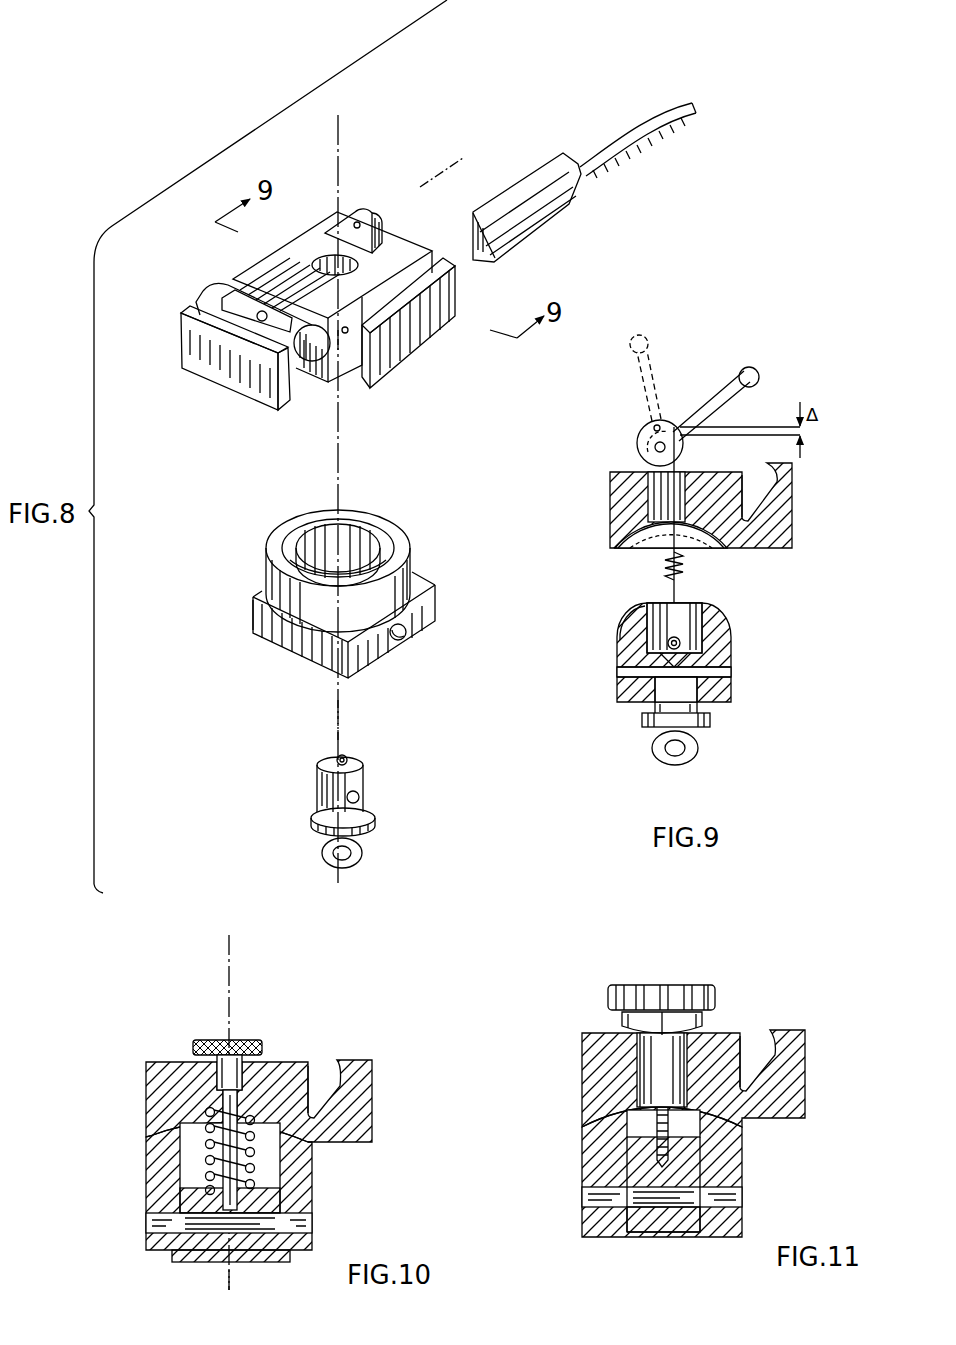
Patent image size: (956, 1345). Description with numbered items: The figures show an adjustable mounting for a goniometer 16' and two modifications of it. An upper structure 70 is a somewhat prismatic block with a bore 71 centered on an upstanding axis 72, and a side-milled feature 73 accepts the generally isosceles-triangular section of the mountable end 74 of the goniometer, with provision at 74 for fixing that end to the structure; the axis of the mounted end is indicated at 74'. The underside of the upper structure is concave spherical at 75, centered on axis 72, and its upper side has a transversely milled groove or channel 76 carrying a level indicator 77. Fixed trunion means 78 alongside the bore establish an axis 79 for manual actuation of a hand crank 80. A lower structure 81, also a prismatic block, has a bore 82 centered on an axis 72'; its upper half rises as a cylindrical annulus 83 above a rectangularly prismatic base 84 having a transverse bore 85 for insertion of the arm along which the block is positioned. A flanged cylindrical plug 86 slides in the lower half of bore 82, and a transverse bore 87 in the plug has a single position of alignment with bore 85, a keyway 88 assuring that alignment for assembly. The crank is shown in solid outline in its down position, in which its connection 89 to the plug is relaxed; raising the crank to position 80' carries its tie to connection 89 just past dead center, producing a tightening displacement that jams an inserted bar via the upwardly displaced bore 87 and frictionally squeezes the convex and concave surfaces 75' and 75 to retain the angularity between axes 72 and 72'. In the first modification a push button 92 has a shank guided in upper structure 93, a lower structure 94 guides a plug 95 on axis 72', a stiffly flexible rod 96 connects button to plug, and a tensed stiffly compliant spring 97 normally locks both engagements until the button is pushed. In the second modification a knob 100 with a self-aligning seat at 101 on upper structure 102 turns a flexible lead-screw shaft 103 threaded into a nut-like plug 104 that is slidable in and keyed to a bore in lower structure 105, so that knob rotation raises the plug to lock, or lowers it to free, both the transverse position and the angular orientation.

In FIG. 8, the goniometer 16' is at (632, 125).
In FIG. 9, the upper structure 70 is at (607, 493).
In FIG. 8, the bore 71 is at (385, 257).
In FIG. 9, the bore 71 is at (615, 527).
In FIG. 8, the upstanding axis 72 is at (376, 488).
In FIG. 10, the upstanding axis 72 is at (271, 1106).
In FIG. 8, the axis 72' is at (380, 719).
In FIG. 10, the axis 72' is at (278, 1286).
In FIG. 8, the side-milled feature 73 is at (383, 288).
In FIG. 9, the side-milled feature 73 is at (758, 470).
In FIG. 10, the side-milled feature 73 is at (322, 1066).
In FIG. 11, the side-milled feature 73 is at (759, 1036).
In FIG. 8, the mountable end 74 is at (527, 187).
In FIG. 8, the probe axis 74' is at (358, 399).
In FIG. 9, the concave spherical underside 75 is at (622, 559).
In FIG. 8, the convex spherical surface 75' is at (388, 546).
In FIG. 9, the convex spherical surface 75' is at (591, 614).
In FIG. 8, the transversely milled groove or channel 76 is at (342, 337).
In FIG. 8, the level indicator 77 is at (210, 300).
In FIG. 8, the fixed trunion means 78 is at (362, 212).
In FIG. 9, the fixed trunion means 78 is at (637, 467).
In FIG. 8, the axis 79 is at (447, 160).
In FIG. 9, the axis 79 is at (655, 443).
In FIG. 9, the hand crank 80 is at (717, 378).
In FIG. 9, the raised position of crank 80' is at (677, 378).
In FIG. 8, the lower structure 81 is at (290, 522).
In FIG. 9, the lower structure 81 is at (611, 655).
In FIG. 8, the bore 82 is at (367, 543).
In FIG. 9, the bore 82 is at (690, 603).
In FIG. 8, the cylindrical annulus 83 is at (318, 612).
In FIG. 8, the rectangularly prismatic base 84 is at (268, 616).
In FIG. 8, the transverse bore 85 is at (400, 633).
In FIG. 9, the transverse bore 85 is at (617, 672).
In FIG. 8, the flanged cylindrical plug 86 is at (378, 809).
In FIG. 9, the flanged cylindrical plug 86 is at (646, 731).
In FIG. 8, the transverse bore 87 is at (363, 775).
In FIG. 9, the transverse bore 87 is at (731, 667).
In FIG. 8, the keyway 88 is at (317, 813).
In FIG. 9, the connection 89 is at (697, 577).
In FIG. 10, the push button 92 is at (240, 1040).
In FIG. 10, the upper structure 93 is at (147, 1093).
In FIG. 10, the lower structure 94 is at (146, 1192).
In FIG. 10, the plug 95 is at (178, 1207).
In FIG. 10, the stiffly flexible rod 96 is at (260, 1160).
In FIG. 10, the spring 97 is at (167, 1155).
In FIG. 11, the knob 100 is at (660, 997).
In FIG. 11, the self-aligning seated reference 101 is at (623, 1020).
In FIG. 11, the upper structure 102 is at (574, 1097).
In FIG. 11, the flexible shaft 103 is at (670, 1120).
In FIG. 11, the plug 104 is at (670, 1217).
In FIG. 11, the lower structure 105 is at (579, 1173).